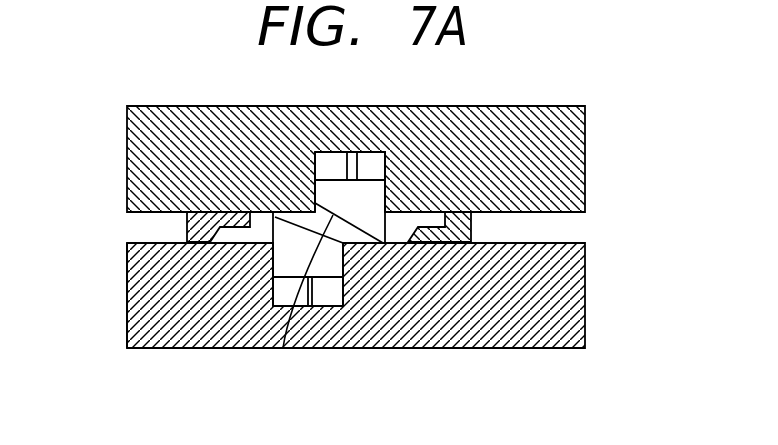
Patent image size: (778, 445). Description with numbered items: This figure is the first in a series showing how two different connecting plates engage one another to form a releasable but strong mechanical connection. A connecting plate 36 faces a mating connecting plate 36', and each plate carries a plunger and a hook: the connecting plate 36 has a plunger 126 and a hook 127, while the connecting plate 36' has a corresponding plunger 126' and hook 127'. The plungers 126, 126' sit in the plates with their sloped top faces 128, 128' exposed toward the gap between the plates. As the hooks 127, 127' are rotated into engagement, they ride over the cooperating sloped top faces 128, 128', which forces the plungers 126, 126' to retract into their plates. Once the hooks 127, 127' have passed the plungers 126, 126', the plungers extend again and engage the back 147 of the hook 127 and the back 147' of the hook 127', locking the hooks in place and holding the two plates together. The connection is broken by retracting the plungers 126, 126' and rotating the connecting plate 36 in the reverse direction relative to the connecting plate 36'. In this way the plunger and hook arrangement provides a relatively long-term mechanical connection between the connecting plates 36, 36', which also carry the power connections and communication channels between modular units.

The connecting plate 36 is at (357, 323).
The connecting plate 36' is at (331, 137).
The plunger 126 is at (243, 304).
The plunger 126' is at (419, 157).
The hook 127 is at (147, 232).
The hook 127' is at (549, 231).
The sloped top face 128 is at (316, 318).
The sloped top face 128' is at (402, 301).
The back of hook 147 is at (78, 295).
The back of hook 147' is at (574, 277).